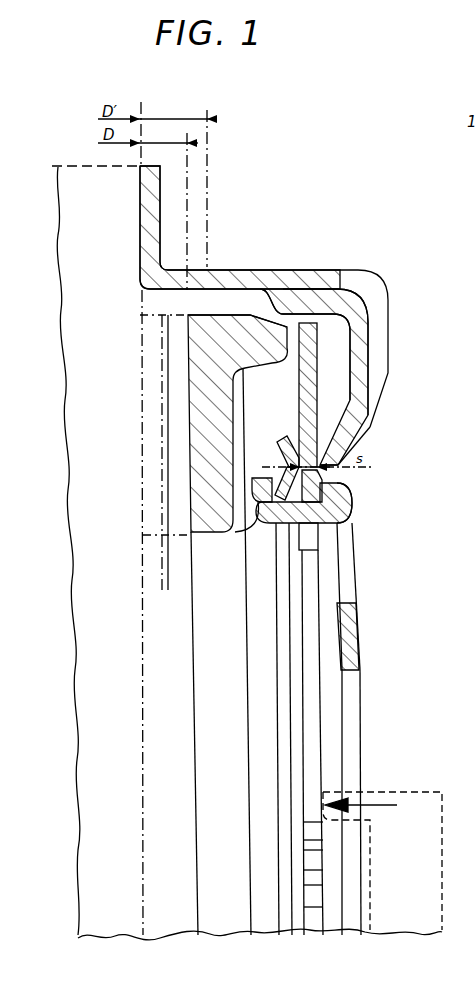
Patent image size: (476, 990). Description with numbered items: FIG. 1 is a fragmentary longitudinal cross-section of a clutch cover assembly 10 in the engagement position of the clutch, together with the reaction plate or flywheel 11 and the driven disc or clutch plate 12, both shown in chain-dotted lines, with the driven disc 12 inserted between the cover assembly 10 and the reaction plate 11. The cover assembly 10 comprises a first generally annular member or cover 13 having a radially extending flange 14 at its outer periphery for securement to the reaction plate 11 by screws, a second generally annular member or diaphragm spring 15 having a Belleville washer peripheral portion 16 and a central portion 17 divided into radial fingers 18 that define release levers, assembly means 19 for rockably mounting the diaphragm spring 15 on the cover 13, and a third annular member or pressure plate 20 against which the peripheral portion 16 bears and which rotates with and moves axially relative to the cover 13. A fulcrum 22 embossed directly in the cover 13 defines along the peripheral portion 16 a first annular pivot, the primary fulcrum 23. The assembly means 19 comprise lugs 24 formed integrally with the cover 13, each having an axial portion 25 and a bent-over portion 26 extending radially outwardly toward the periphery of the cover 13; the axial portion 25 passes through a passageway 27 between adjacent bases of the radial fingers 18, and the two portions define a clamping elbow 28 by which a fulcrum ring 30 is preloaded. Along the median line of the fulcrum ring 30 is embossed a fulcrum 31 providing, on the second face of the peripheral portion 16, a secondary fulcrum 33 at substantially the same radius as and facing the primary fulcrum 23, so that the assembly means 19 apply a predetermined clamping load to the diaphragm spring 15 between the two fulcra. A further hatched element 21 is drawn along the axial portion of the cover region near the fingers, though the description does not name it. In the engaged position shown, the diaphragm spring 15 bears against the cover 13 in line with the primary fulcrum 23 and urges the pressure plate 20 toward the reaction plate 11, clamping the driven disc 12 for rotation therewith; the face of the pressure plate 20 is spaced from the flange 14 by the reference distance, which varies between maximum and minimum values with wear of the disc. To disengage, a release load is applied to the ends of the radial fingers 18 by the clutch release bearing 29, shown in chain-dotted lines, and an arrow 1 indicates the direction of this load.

The direction of flow arrow 1 is at (362, 807).
The cover assembly 10 is at (281, 246).
The reaction plate or flywheel 11 is at (67, 160).
The driven disc or clutch plate 12 is at (150, 308).
The cover 13 is at (366, 270).
The radially extending flange 14 is at (145, 218).
The diaphragm spring 15 is at (325, 343).
The Belleville washer peripheral portion 16 is at (311, 321).
The central portion 17 is at (318, 750).
The radial fingers 18 is at (318, 872).
The assembly means 19 is at (359, 520).
The pressure plate 20 is at (222, 312).
The sleeve 21 is at (358, 662).
The fulcrum 22 is at (361, 438).
The primary fulcrum 23 is at (320, 462).
The lugs 24 is at (326, 525).
The axial portion 25 is at (298, 522).
The bent-over portion 26 is at (256, 488).
The passageway 27 is at (352, 485).
The clamping elbow 28 is at (243, 508).
The clutch release bearing 29 is at (408, 788).
The fulcrum ring 30 is at (278, 437).
The fulcrum 31 is at (295, 452).
The secondary fulcrum 33 is at (302, 518).